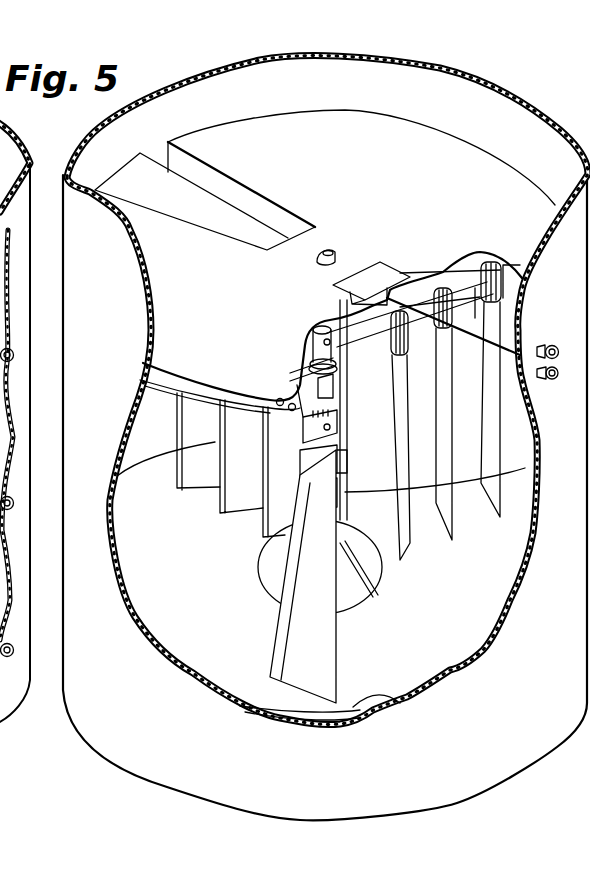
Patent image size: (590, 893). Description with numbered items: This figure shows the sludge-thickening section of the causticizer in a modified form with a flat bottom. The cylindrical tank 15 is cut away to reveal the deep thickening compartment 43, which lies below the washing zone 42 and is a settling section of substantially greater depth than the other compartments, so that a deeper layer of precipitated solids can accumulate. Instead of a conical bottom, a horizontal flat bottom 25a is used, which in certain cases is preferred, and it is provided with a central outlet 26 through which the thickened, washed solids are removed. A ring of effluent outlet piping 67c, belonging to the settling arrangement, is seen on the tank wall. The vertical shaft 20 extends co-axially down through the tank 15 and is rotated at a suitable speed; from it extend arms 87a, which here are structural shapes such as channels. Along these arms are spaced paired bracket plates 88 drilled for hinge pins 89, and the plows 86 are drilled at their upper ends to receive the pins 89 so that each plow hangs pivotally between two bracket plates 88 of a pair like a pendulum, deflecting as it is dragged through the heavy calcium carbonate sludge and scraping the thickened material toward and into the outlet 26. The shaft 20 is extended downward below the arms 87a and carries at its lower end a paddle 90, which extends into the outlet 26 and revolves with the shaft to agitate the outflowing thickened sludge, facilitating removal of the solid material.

The cylindrical tank 15 is at (63, 364).
The vertical shaft 20 is at (336, 257).
The horizontal flat bottom 25a is at (400, 703).
The central outlet 26 is at (392, 597).
The washing zone 42 is at (327, 390).
The sludge-thickening compartment 43 is at (216, 409).
The effluent outlet piping ring 67c is at (13, 506).
The plows 86 is at (178, 470).
The arms 87a is at (374, 355).
The bracket plates 88 is at (310, 493).
The hinge pins 89 is at (360, 481).
The paddle 90 is at (403, 580).